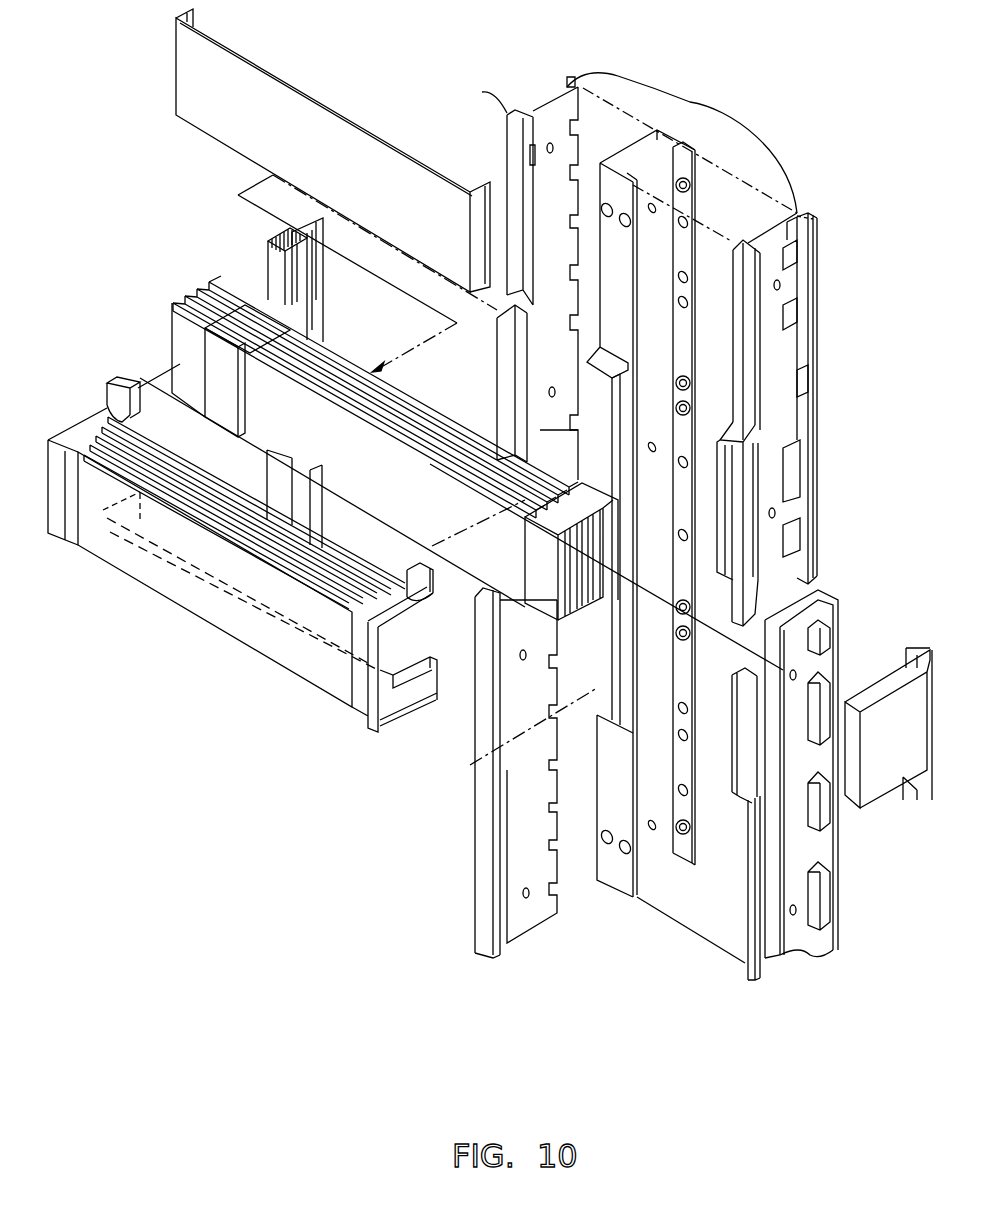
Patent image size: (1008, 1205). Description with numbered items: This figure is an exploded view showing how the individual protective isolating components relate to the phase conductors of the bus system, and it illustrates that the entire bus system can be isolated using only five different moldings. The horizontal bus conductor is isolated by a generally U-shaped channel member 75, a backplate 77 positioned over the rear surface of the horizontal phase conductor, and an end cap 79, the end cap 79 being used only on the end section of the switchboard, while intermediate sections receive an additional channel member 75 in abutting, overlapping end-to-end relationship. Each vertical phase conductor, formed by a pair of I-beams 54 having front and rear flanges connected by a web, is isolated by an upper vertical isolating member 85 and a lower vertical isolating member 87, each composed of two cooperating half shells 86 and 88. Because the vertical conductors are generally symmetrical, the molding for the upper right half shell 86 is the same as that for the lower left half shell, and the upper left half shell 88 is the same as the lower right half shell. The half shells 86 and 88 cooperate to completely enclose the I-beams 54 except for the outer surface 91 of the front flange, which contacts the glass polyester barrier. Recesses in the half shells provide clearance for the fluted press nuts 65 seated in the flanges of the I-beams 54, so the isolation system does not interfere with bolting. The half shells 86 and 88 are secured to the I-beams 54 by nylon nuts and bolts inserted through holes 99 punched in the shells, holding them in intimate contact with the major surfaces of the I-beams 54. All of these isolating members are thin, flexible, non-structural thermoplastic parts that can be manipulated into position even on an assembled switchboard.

The I-beams 54 is at (645, 152).
The fluted press nuts 65 is at (690, 186).
The U-shaped channel member 75 is at (100, 410).
The backplate 77 is at (272, 75).
The end cap 79 is at (872, 795).
The upper vertical isolating member 85 is at (714, 116).
The half shell 86 is at (818, 220).
The lower vertical isolating member 87 is at (528, 922).
The half shell 88 is at (512, 110).
The outer surface of the front flange 91 is at (687, 145).
The holes 99 is at (550, 153).